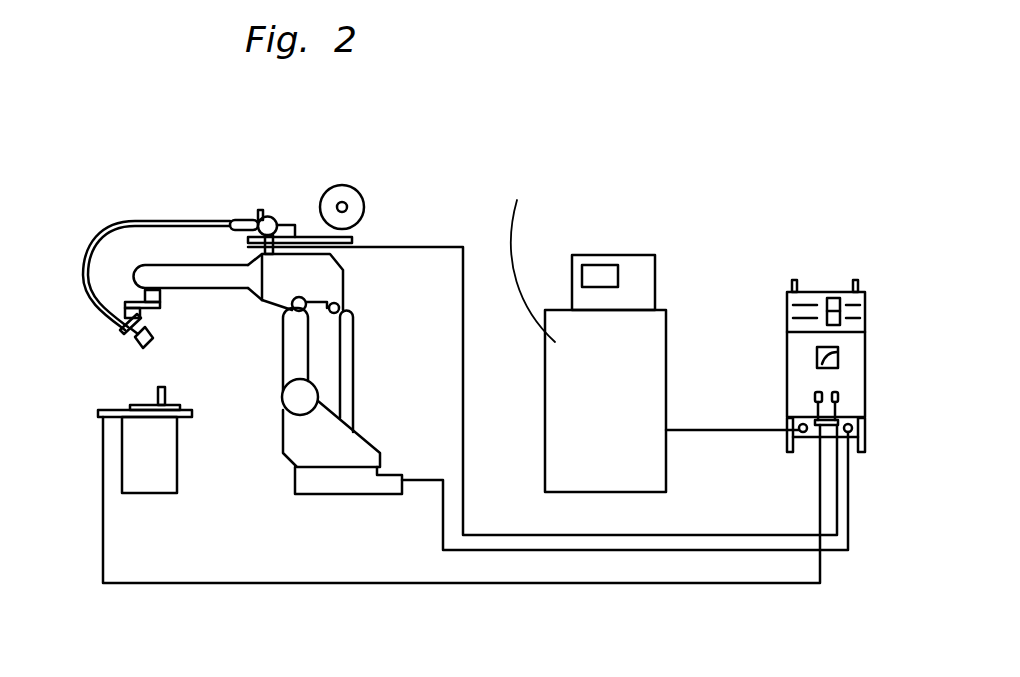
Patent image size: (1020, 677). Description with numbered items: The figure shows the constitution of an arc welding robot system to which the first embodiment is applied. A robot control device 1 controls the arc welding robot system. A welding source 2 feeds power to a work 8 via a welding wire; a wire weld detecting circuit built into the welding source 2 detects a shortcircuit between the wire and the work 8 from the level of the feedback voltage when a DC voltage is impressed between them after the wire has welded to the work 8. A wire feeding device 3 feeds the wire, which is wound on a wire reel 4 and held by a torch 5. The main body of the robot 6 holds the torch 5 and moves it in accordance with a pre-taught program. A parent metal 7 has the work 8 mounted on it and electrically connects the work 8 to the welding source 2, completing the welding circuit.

The robot control device 1 is at (663, 323).
The welding source 2 is at (785, 342).
The wire feeding device 3 is at (268, 217).
The wire reel 4 is at (347, 186).
The torch 5 is at (130, 336).
The main body of the robot 6 is at (333, 280).
The parent metal 7 is at (192, 413).
The work 8 is at (167, 397).